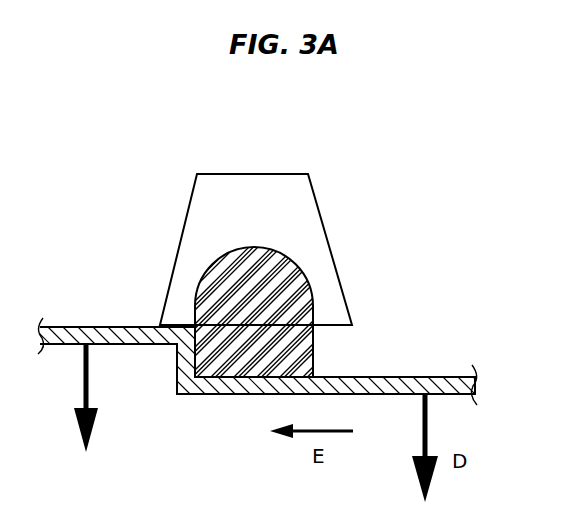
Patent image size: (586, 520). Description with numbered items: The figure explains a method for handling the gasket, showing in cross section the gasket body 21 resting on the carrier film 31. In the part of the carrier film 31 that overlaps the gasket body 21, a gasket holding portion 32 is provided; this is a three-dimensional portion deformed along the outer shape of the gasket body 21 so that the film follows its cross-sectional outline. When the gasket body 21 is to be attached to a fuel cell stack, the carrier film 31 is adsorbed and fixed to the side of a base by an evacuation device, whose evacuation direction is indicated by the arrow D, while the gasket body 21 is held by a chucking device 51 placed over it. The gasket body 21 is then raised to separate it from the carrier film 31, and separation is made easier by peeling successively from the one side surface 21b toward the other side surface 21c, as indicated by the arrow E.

The chucking device 51 is at (207, 207).
The gasket body 21 is at (270, 288).
The one side surface 21b is at (315, 362).
The other side surface 21c is at (187, 358).
The carrier film 31 is at (432, 385).
The gasket holding portion 32 is at (192, 385).